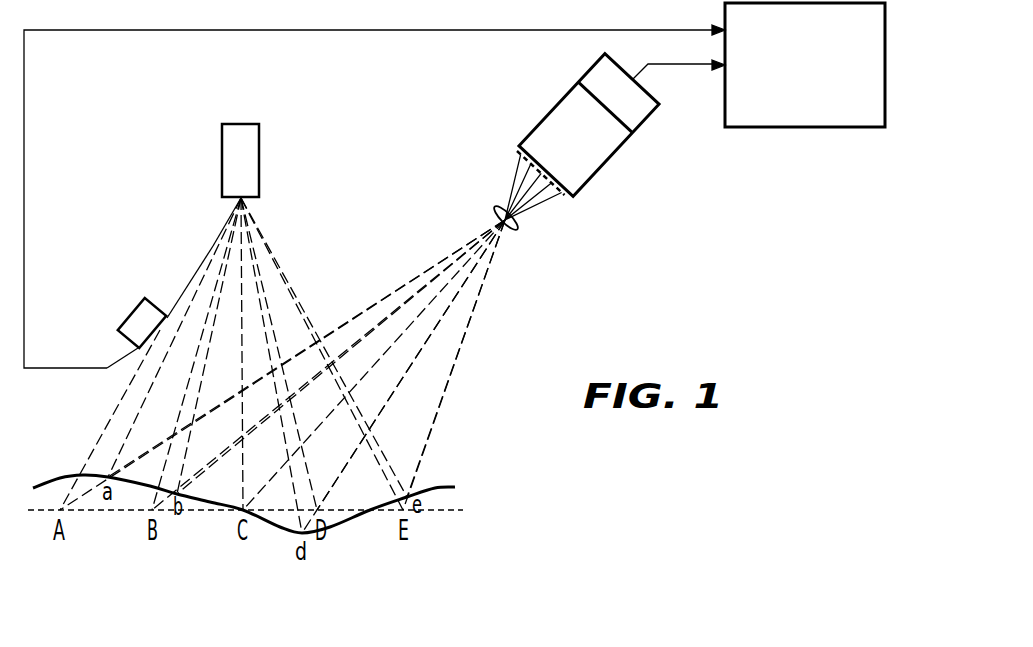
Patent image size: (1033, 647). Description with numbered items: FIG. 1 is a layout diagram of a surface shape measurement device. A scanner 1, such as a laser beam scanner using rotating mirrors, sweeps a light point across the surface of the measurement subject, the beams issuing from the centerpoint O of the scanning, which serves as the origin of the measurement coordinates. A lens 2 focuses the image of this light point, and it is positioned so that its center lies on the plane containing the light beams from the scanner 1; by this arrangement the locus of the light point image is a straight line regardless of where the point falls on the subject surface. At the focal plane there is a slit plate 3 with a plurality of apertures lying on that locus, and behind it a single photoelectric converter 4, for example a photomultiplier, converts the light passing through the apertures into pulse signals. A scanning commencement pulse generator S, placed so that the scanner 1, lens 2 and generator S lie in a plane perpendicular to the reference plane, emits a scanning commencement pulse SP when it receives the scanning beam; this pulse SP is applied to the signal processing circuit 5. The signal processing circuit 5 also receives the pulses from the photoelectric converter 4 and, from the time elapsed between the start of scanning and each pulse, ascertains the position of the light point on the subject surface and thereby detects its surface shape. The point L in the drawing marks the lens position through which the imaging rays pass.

The scanner 1 is at (252, 152).
The lens 2 is at (497, 210).
The slit plate 3 is at (519, 160).
The photoelectric converter 4 is at (607, 158).
The signal processing circuit 5 is at (755, 127).
The scanning commencement pulse generator S is at (133, 312).
The scanning commencement pulse SP is at (125, 30).
The centerpoint of scanning O is at (233, 365).
The lens focal point L is at (288, 376).